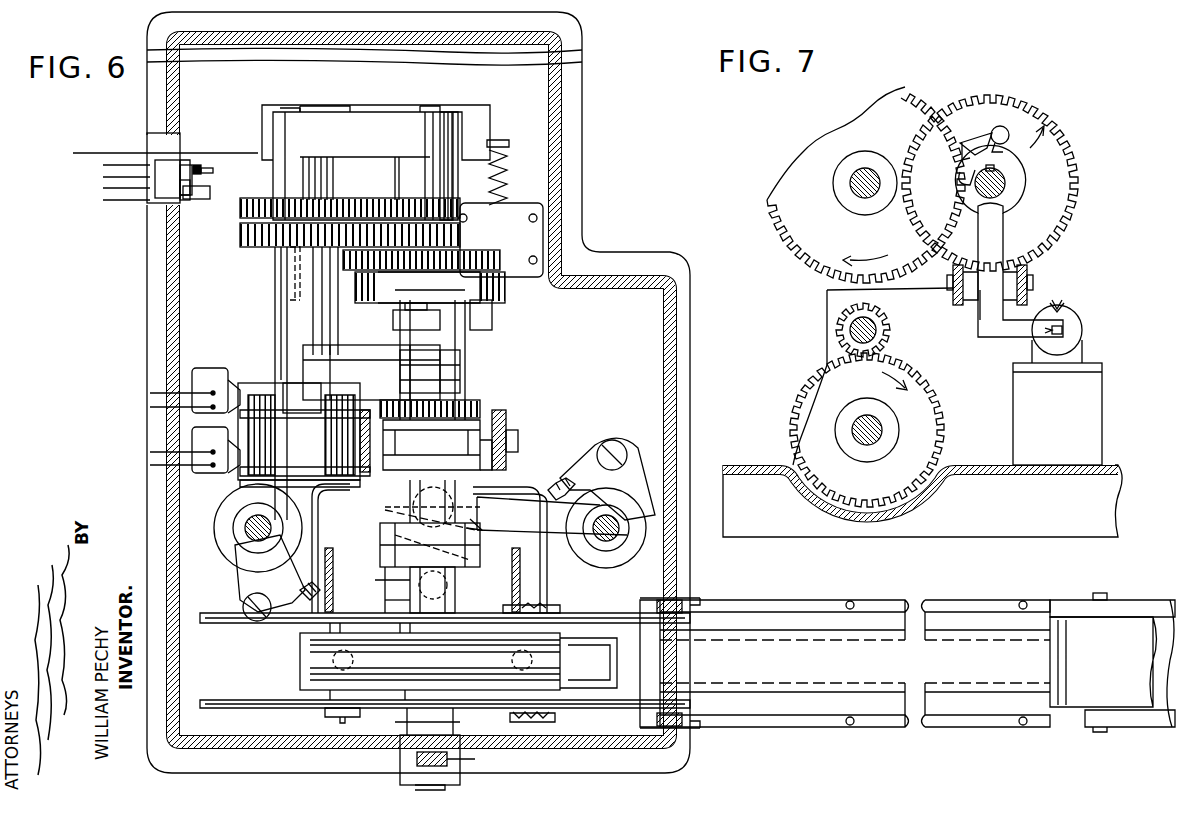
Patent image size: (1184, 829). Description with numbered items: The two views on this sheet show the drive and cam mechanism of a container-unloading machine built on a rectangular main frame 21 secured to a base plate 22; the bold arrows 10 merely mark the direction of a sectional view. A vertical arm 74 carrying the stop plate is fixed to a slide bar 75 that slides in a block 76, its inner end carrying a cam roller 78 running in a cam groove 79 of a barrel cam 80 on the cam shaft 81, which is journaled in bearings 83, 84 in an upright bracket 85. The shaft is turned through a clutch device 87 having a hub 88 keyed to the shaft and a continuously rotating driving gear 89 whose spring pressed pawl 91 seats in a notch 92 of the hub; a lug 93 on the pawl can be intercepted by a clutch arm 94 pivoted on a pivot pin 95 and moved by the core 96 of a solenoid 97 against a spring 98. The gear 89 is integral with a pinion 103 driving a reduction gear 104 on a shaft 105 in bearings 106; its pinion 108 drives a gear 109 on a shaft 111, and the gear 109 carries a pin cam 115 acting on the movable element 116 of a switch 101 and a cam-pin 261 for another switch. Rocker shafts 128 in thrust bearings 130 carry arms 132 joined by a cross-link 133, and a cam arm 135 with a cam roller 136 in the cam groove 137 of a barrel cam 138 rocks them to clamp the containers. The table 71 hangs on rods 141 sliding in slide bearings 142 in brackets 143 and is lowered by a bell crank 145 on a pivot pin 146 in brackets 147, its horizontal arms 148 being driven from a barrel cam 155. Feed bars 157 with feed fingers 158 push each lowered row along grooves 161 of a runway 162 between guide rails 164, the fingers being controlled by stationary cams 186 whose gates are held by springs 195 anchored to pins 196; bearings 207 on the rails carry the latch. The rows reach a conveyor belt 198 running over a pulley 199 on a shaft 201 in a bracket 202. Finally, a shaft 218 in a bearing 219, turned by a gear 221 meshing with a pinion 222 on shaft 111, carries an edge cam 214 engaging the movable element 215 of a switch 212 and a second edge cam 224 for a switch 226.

In FIG. 6, the electrical leads 10 is at (92, 158).
In FIG. 6, the main frame 21 is at (640, 278).
In FIG. 6, the base plate 22 is at (645, 303).
In FIG. 7, the base plate 22 is at (1002, 520).
In FIG. 6, the vertically movable table 71 is at (313, 656).
In FIG. 6, the vertical arm 74 is at (470, 767).
In FIG. 6, the slide bar 75 is at (420, 728).
In FIG. 6, the block 76 is at (460, 712).
In FIG. 6, the cam roller 78 is at (400, 590).
In FIG. 6, the cam groove 79 is at (391, 607).
In FIG. 6, the barrel cam 80 is at (490, 613).
In FIG. 6, the cam shaft 81 is at (428, 108).
In FIG. 7, the cam shaft 81 is at (1005, 184).
In FIG. 6, the bearing 83 is at (470, 377).
In FIG. 6, the bearing 84 is at (450, 120).
In FIG. 6, the bracket 85 is at (365, 132).
In FIG. 7, the bracket 85 is at (953, 296).
In FIG. 6, the clutch device 87 is at (521, 298).
In FIG. 7, the clutch device 87 is at (1042, 269).
In FIG. 7, the inner cylindrical hub 88 is at (1008, 196).
In FIG. 6, the driving gear 89 is at (510, 256).
In FIG. 7, the driving gear 89 is at (1055, 160).
In FIG. 7, the spring pressed pawl 91 is at (1002, 130).
In FIG. 7, the notch 92 is at (960, 172).
In FIG. 6, the lug 93 is at (423, 305).
In FIG. 7, the lug 93 is at (968, 145).
In FIG. 6, the clutch arm 94 is at (505, 304).
In FIG. 7, the clutch arm 94 is at (985, 228).
In FIG. 6, the pivot pin 95 is at (400, 323).
In FIG. 7, the pivot pin 95 is at (1040, 280).
In FIG. 7, the movable core 96 is at (1065, 323).
In FIG. 6, the electric solenoid 97 is at (506, 215).
In FIG. 7, the electric solenoid 97 is at (1082, 336).
In FIG. 6, the spring 98 is at (505, 172).
In FIG. 6, the electric switch 101 is at (185, 160).
In FIG. 6, the pinion 103 is at (460, 238).
In FIG. 6, the rotation reduction gear 104 is at (190, 240).
In FIG. 7, the rotation reduction gear 104 is at (820, 160).
In FIG. 6, the shaft 105 is at (310, 108).
In FIG. 7, the shaft 105 is at (850, 185).
In FIG. 6, the bearings 106 is at (282, 123).
In FIG. 6, the pinion 108 is at (343, 200).
In FIG. 6, the rotation reduction gear 109 is at (155, 212).
In FIG. 7, the shaft 111 is at (867, 323).
In FIG. 6, the pin cam 115 is at (213, 167).
In FIG. 6, the movable element 116 is at (197, 165).
In FIG. 6, the rocker shafts 128 is at (247, 537).
In FIG. 6, the thrust bearings 130 is at (222, 524).
In FIG. 6, the arms 132 is at (610, 495).
In FIG. 6, the cross-link 133 is at (540, 476).
In FIG. 6, the cam arm 135 is at (552, 533).
In FIG. 6, the cam roller 136 is at (410, 512).
In FIG. 6, the cam groove 137 is at (480, 527).
In FIG. 6, the barrel cam 138 is at (432, 553).
In FIG. 6, the depending rods 141 is at (305, 642).
In FIG. 6, the vertical slide bearings 142 is at (310, 678).
In FIG. 6, the brackets 143 is at (335, 565).
In FIG. 6, the bifurcated bell crank 145 is at (500, 430).
In FIG. 6, the pivot pin 146 is at (520, 447).
In FIG. 6, the brackets 147 is at (413, 446).
In FIG. 6, the horizontal arms 148 is at (330, 545).
In FIG. 6, the barrel cam 155 is at (480, 403).
In FIG. 6, the feed bars 157 is at (833, 690).
In FIG. 6, the feed fingers 158 is at (625, 698).
In FIG. 6, the parallel grooves 161 is at (884, 682).
In FIG. 6, the runway 162 is at (822, 635).
In FIG. 6, the guide rails 164 is at (933, 608).
In FIG. 6, the stationary cams 186 is at (213, 700).
In FIG. 6, the springs 195 is at (524, 606).
In FIG. 6, the pins 196 is at (570, 612).
In FIG. 6, the conveyor belt 198 is at (1083, 673).
In FIG. 6, the pulley 199 is at (1080, 604).
In FIG. 6, the shaft 201 is at (1103, 600).
In FIG. 6, the bracket 202 is at (1135, 722).
In FIG. 6, the bearings 207 is at (680, 600).
In FIG. 6, the switch 212 is at (203, 375).
In FIG. 6, the edge cam 214 is at (287, 410).
In FIG. 6, the movable element 215 is at (275, 385).
In FIG. 6, the shaft 218 is at (300, 486).
In FIG. 7, the shaft 218 is at (882, 431).
In FIG. 6, the bearing 219 is at (283, 295).
In FIG. 7, the gear 221 is at (915, 402).
In FIG. 7, the pinion 222 is at (890, 338).
In FIG. 6, the second edge cam 224 is at (286, 476).
In FIG. 6, the electric switch 226 is at (206, 473).
In FIG. 6, the cam-pin 261 is at (212, 190).